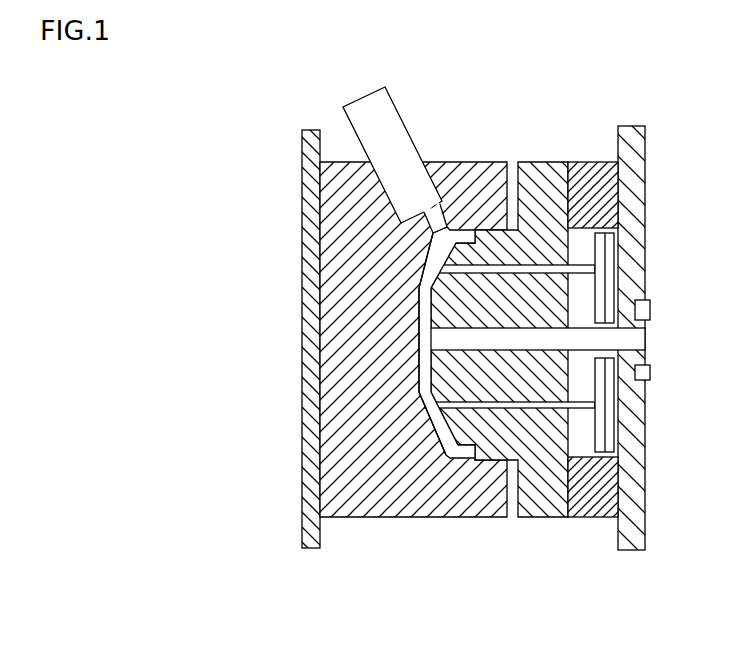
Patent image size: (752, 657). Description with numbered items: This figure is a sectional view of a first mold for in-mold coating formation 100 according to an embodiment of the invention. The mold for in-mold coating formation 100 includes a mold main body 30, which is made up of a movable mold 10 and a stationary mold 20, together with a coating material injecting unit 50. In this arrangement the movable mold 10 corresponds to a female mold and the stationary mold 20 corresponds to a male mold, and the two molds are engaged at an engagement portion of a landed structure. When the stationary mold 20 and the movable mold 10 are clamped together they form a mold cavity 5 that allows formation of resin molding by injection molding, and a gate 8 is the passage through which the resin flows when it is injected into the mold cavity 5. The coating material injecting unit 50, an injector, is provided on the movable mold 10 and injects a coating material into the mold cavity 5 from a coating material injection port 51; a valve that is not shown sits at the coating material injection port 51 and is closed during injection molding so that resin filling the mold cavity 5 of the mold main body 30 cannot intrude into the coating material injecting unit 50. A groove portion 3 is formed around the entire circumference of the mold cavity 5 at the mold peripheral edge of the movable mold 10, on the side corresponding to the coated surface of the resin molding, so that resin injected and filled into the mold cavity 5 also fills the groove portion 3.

The mold for in-mold coating formation 100 is at (474, 320).
The coating material injecting unit 50 is at (362, 98).
The coating material injection port 51 is at (435, 238).
The groove portion 3 is at (445, 231).
The mold cavity 5 is at (411, 420).
The gate 8 is at (612, 341).
The movable mold 10 is at (445, 505).
The stationary mold 20 is at (422, 579).
The mold main body 30 is at (473, 380).